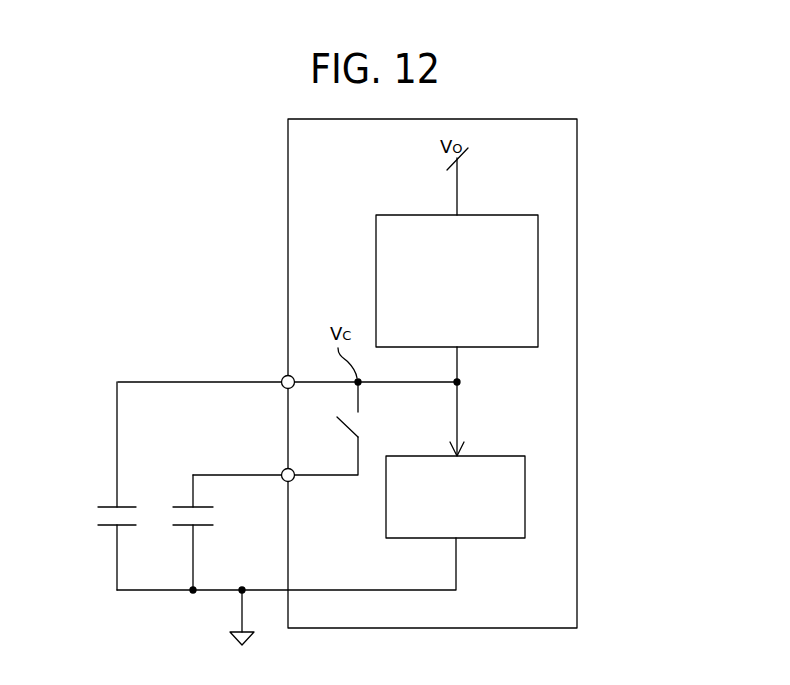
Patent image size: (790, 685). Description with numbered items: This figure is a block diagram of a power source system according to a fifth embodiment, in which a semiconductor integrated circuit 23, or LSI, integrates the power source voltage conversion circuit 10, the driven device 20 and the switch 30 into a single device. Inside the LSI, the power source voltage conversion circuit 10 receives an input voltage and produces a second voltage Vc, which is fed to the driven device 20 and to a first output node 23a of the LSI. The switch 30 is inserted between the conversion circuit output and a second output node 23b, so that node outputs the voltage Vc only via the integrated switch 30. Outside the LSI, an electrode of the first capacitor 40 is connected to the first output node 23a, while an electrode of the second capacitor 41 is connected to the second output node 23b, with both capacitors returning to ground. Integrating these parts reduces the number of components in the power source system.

The power source voltage conversion circuit 10 is at (508, 215).
The driven device 20 is at (487, 456).
The semiconductor integrated circuit 23 is at (581, 349).
The first output node 23a is at (283, 376).
The second output node 23b is at (283, 469).
The switch 30 is at (348, 427).
The first capacitor 40 is at (187, 527).
The second capacitor 41 is at (112, 527).